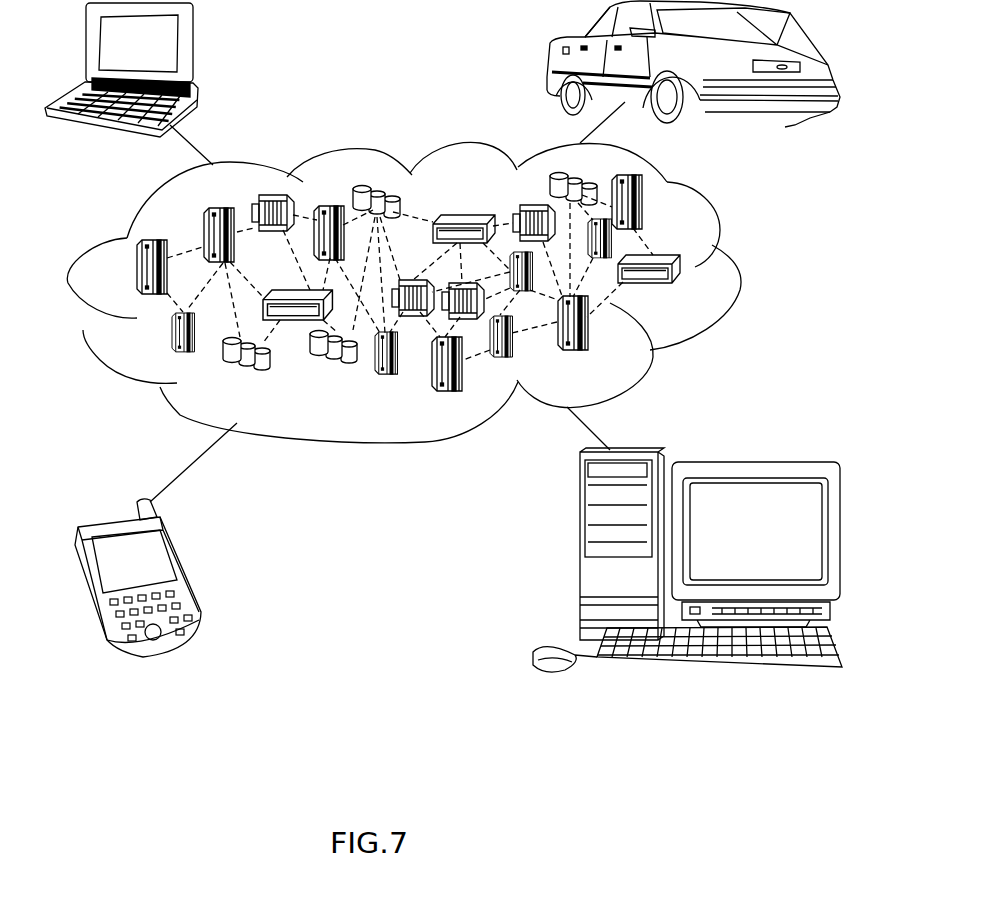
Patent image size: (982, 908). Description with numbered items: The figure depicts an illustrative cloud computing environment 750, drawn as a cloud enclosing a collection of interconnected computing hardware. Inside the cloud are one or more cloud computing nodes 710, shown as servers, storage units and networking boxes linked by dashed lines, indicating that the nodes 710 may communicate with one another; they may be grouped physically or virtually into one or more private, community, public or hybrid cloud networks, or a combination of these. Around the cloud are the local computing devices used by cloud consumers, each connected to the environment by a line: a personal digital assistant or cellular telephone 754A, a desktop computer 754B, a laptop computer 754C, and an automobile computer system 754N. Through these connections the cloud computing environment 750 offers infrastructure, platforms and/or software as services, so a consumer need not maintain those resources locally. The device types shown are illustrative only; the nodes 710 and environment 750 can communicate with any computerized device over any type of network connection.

The cloud computing environment 750 is at (717, 233).
The cloud computing nodes 710 is at (702, 289).
The laptop computer 754C is at (193, 47).
The automobile computer system 754N is at (557, 53).
The personal digital assistant (PDA) or cellular telephone 754A is at (183, 570).
The desktop computer 754B is at (578, 555).